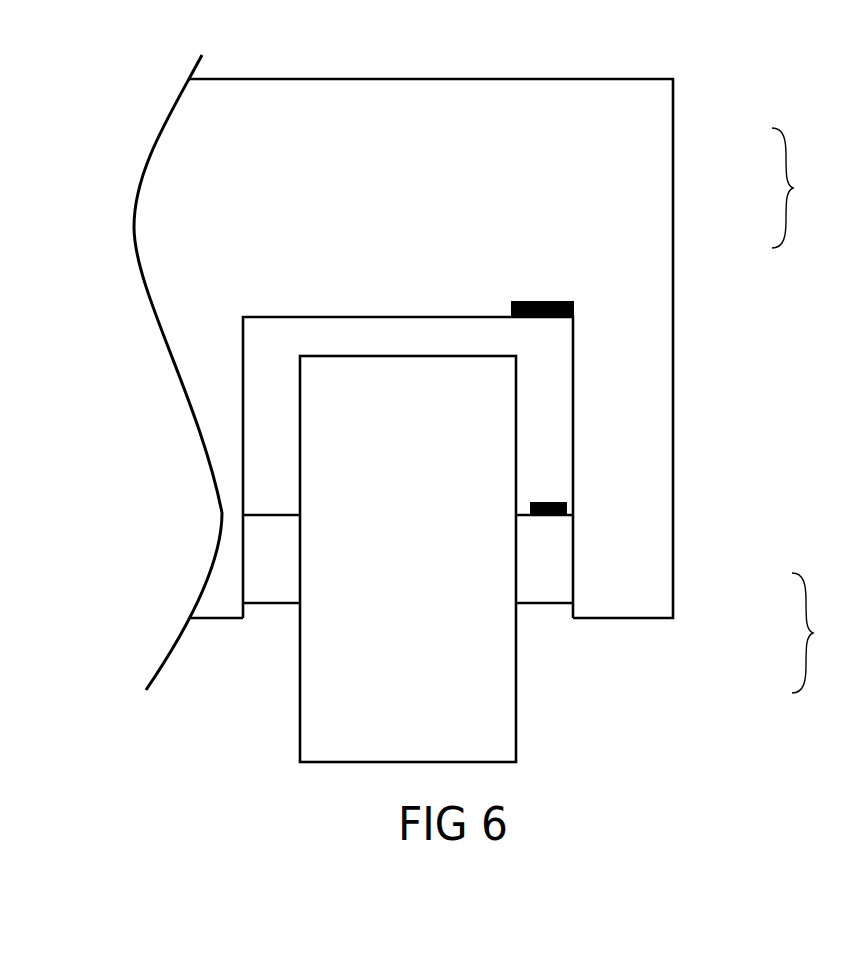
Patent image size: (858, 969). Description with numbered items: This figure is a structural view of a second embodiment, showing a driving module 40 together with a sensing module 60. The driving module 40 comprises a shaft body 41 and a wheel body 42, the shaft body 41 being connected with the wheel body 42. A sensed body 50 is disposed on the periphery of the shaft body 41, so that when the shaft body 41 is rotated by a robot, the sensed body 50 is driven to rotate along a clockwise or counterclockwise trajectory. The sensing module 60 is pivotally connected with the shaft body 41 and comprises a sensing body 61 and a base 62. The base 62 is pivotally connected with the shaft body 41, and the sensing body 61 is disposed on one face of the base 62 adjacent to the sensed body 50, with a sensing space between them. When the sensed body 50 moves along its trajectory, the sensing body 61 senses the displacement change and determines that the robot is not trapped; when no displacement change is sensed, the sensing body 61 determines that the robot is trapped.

The driving module 40 is at (818, 633).
The shaft body 41 is at (555, 585).
The wheel body 42 is at (493, 687).
The sensed body 50 is at (550, 500).
The sensing module 60 is at (798, 188).
The sensing body 61 is at (560, 302).
The base 62 is at (628, 148).